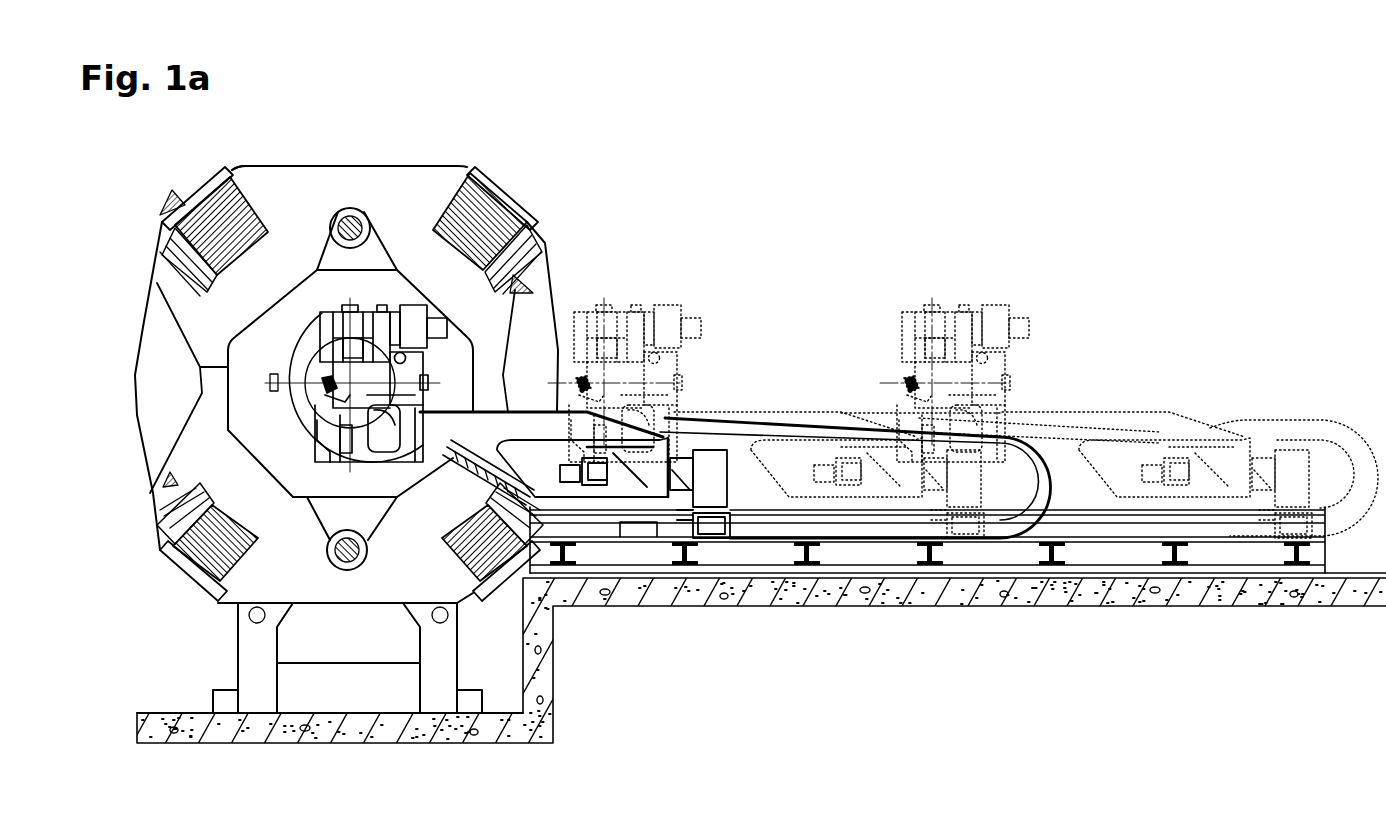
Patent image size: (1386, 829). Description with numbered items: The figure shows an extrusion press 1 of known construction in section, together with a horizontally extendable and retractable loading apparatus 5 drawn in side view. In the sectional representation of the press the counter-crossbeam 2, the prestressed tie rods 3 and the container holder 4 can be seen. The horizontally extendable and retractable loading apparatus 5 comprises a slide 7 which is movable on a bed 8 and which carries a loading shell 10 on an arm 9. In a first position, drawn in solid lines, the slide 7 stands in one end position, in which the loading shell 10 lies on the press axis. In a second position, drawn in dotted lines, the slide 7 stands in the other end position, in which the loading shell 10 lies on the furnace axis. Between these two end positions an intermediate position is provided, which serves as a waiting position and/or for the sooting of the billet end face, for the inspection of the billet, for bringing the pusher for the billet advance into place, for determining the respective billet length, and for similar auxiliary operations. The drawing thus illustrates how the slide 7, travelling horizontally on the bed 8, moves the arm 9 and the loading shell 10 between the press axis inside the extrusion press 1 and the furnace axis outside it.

The extrusion press 1 is at (303, 142).
The counter-crossbeam 2 is at (250, 196).
The prestressed tie rods 3 is at (203, 199).
The container holder 4 is at (200, 366).
The horizontally extendable and retractable loading apparatus 5 is at (625, 264).
The slide 7 is at (603, 507).
The bed 8 is at (758, 550).
The arm 9 is at (443, 430).
The loading shell 10 is at (380, 285).